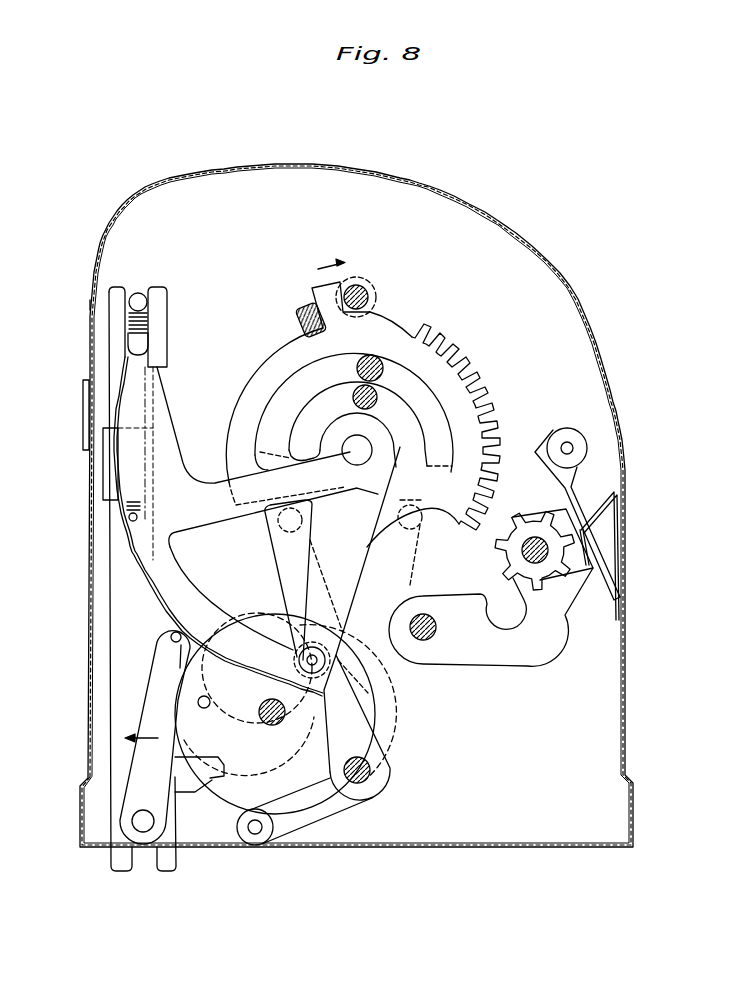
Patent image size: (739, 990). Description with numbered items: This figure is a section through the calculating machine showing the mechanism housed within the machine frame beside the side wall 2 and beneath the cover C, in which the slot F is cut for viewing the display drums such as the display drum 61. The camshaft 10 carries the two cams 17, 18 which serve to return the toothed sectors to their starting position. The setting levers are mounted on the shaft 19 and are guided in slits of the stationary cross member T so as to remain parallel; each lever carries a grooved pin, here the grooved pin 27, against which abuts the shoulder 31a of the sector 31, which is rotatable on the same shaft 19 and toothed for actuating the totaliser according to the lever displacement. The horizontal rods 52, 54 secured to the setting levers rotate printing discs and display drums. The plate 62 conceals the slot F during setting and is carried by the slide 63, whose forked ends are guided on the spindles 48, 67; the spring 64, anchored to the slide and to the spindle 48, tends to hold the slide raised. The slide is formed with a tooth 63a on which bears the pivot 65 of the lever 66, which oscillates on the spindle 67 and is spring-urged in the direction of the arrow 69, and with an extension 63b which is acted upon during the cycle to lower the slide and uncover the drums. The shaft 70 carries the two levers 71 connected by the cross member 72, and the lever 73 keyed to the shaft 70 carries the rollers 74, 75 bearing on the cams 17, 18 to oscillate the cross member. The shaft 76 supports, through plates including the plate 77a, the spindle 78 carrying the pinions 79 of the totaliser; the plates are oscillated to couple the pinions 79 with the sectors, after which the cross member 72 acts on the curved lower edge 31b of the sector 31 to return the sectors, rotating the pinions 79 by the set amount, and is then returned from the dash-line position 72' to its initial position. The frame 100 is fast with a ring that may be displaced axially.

The side wall 2 is at (626, 683).
The cover C is at (166, 190).
The slot F is at (87, 395).
The camshaft 10 is at (273, 724).
The cam 17 is at (257, 612).
The cam 18 is at (236, 790).
The shaft 19 is at (357, 453).
The grooved pin 27 is at (363, 290).
The sector 31 is at (450, 372).
The shoulder 31a is at (322, 292).
The edge 31b is at (436, 516).
The spindle 48 is at (141, 300).
The horizontal rod 52 is at (374, 400).
The horizontal rod 54 is at (373, 363).
The display drum 61 is at (175, 566).
The plate 62 is at (105, 486).
The slide 63 is at (115, 318).
The tooth 63a is at (170, 641).
The extension 63b is at (205, 759).
The spring 64 is at (140, 343).
The pivot 65 is at (180, 636).
The lever 66 is at (150, 717).
The spindle 67 is at (153, 822).
The arrow 69 is at (147, 732).
The shaft 70 is at (370, 780).
The lever 71 is at (276, 556).
The cross member 72 is at (264, 520).
The cross member position 72' is at (377, 515).
The lever 73 is at (310, 818).
The roller 74 is at (258, 842).
The roller 75 is at (312, 642).
The shaft 76 is at (426, 640).
The plate 77a is at (520, 664).
The spindle 78 is at (537, 522).
The pinion 79 is at (540, 588).
The frame 100 is at (578, 483).
The cross member T is at (298, 318).